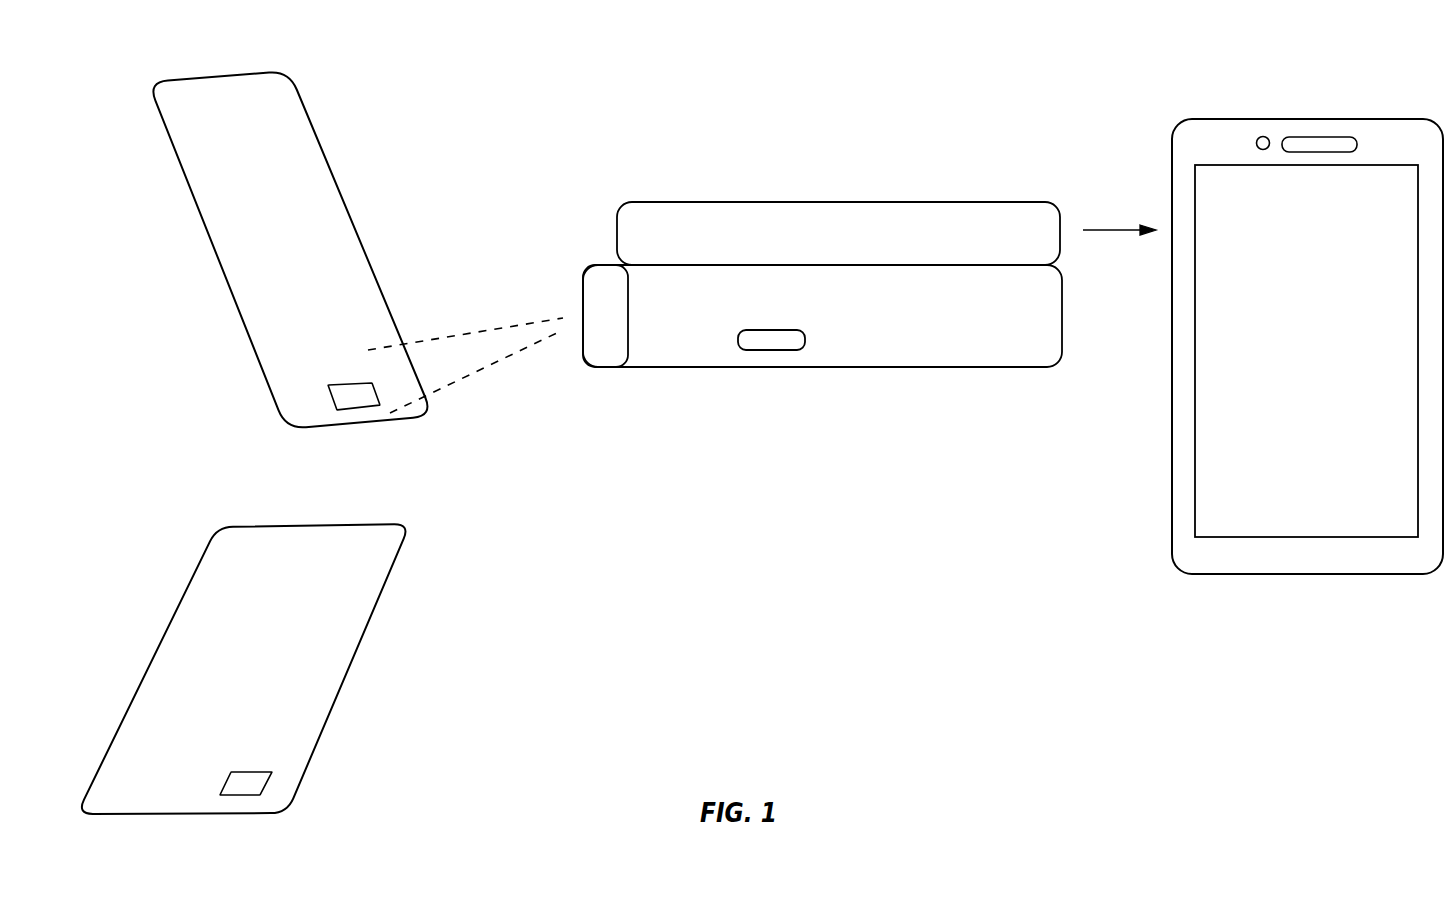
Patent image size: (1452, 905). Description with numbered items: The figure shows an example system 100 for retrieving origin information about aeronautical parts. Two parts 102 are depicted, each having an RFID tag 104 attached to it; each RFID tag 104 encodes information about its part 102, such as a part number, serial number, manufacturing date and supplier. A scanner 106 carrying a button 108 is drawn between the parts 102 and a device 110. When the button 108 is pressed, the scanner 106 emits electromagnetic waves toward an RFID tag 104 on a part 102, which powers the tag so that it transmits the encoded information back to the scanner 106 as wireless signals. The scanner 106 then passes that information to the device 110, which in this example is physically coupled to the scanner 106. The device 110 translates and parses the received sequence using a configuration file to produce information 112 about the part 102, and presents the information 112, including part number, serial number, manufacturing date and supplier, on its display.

The system 100 is at (804, 43).
The part 102 is at (323, 146).
The RFID tag 104 is at (350, 383).
The scanner 106 is at (653, 368).
The button 108 is at (767, 350).
The device 110 is at (898, 202).
The information 112 is at (1308, 370).